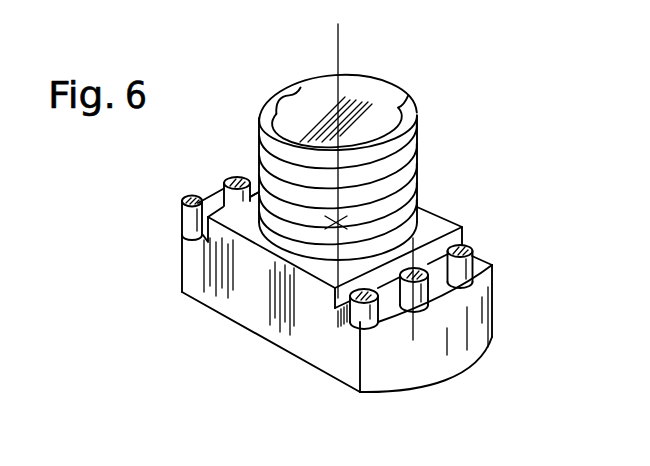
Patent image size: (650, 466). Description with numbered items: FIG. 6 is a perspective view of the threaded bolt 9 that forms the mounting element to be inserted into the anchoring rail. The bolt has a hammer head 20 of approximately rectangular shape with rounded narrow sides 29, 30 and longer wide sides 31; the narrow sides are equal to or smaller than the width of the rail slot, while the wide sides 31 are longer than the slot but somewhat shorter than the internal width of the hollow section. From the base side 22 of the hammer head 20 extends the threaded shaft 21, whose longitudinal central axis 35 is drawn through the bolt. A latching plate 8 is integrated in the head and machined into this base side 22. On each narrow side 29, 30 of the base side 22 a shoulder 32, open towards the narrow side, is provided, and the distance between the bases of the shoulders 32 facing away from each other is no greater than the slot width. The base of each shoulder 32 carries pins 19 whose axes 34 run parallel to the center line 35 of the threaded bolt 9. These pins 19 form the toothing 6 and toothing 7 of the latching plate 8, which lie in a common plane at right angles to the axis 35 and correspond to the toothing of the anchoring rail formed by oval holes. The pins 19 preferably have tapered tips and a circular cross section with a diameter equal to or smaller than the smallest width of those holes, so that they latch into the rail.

The toothing 6 is at (391, 333).
The toothing 7 is at (206, 189).
The latching plate 8 is at (378, 261).
The threaded bolt 9 is at (351, 142).
The pins 19 is at (228, 178).
The hammer head 20 is at (505, 287).
The threaded shaft 21 is at (397, 178).
The base side 22 is at (463, 227).
The narrow side 29 is at (453, 350).
The narrow side 30 is at (253, 174).
The wide side 31 is at (248, 307).
The shoulder 32 is at (203, 241).
The pin axis 34 is at (413, 340).
The longitudinal central axis 35 is at (339, 47).